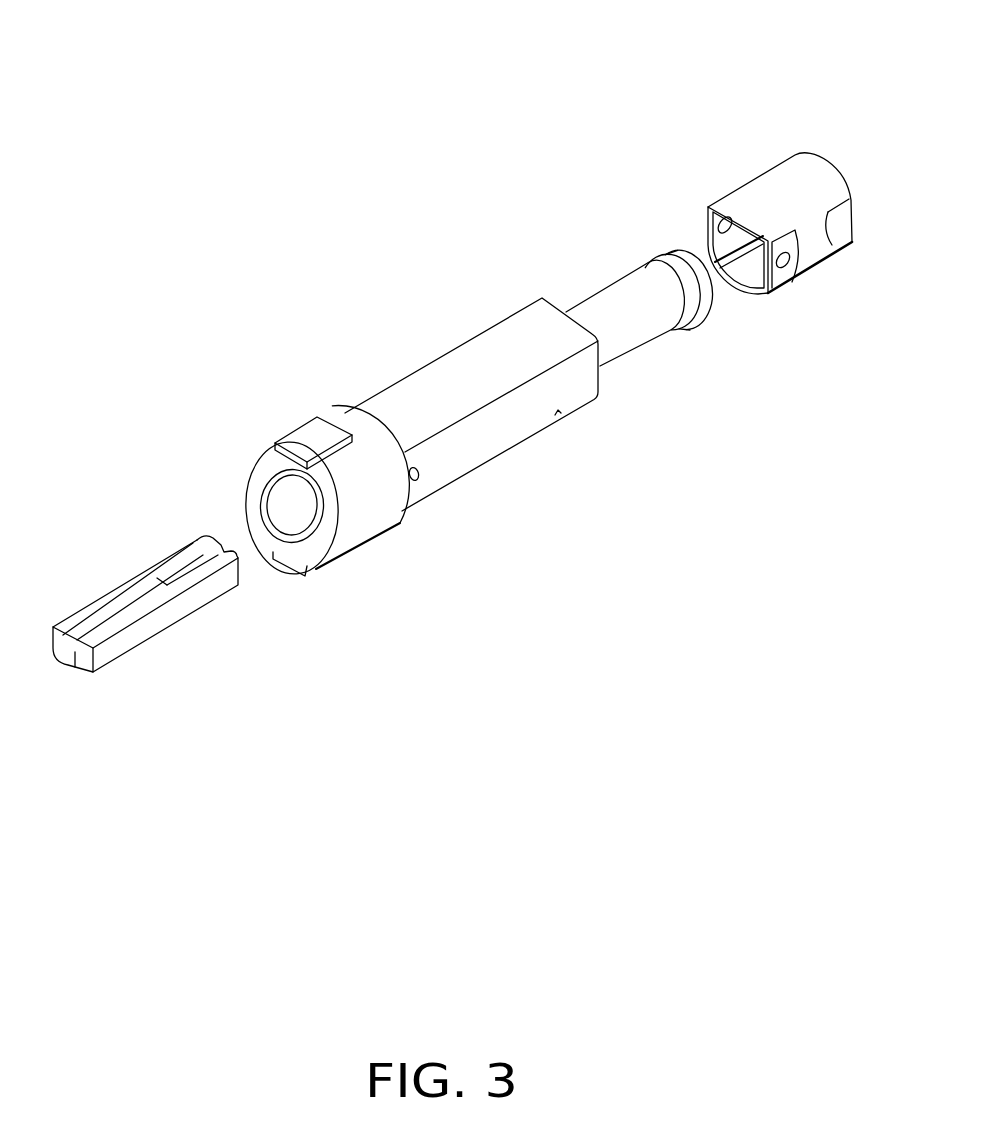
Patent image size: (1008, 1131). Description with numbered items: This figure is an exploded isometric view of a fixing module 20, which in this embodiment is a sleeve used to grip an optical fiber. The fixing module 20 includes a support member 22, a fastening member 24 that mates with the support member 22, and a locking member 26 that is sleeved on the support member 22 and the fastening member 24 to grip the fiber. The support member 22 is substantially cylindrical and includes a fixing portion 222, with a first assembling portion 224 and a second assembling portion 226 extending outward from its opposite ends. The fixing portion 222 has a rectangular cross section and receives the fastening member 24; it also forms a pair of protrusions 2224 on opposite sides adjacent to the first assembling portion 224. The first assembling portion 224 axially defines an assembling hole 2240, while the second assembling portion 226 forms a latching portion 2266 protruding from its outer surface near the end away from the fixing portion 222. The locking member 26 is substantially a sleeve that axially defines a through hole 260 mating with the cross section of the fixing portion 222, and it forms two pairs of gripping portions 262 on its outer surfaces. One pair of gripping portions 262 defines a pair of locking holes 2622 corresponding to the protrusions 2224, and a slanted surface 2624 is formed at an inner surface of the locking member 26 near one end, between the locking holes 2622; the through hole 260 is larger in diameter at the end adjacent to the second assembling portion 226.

The fixing module 20 is at (392, 63).
The support member 22 is at (435, 352).
The fixing portion 222 is at (510, 422).
The protrusions 2224 is at (420, 474).
The first assembling portion 224 is at (375, 507).
The assembling hole 2240 is at (288, 497).
The second assembling portion 226 is at (628, 338).
The latching portion 2266 is at (650, 260).
The fastening member 24 is at (145, 628).
The locking member 26 is at (749, 162).
The through hole 260 is at (725, 238).
The gripping portions 262 is at (840, 234).
The locking holes 2622 is at (723, 224).
The slanted surface 2624 is at (752, 275).